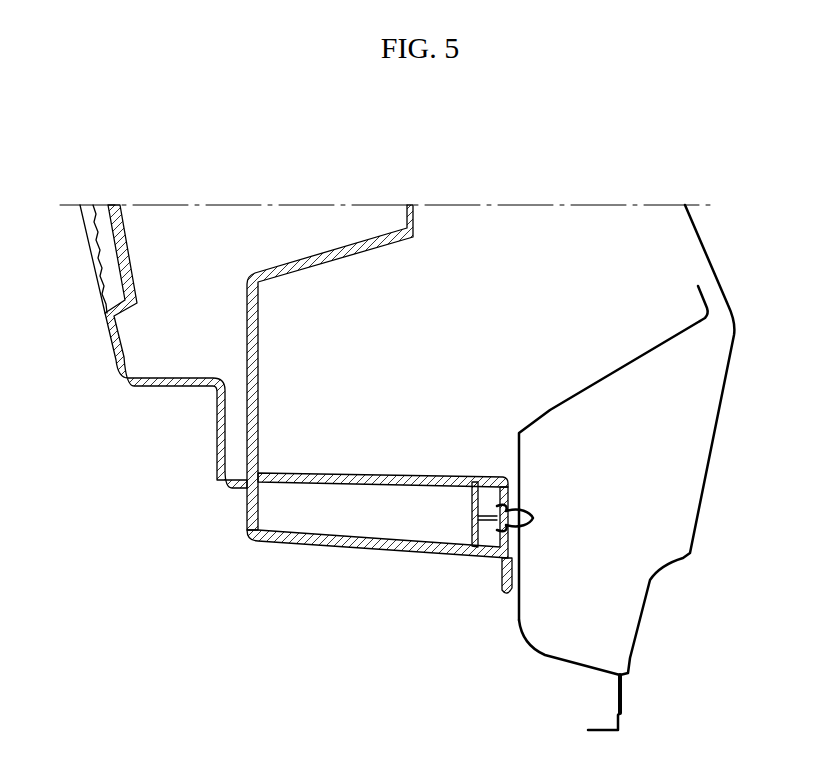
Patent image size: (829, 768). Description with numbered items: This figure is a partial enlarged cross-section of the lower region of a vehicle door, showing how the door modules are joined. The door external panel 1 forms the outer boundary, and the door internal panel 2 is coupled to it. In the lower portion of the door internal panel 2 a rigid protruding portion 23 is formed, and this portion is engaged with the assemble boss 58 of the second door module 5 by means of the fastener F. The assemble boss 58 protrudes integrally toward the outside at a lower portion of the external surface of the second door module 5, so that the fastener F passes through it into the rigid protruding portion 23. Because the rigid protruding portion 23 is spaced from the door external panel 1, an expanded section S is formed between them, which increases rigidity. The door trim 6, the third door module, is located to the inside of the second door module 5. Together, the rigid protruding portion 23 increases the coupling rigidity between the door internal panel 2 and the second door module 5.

The door external panel 1 is at (708, 457).
The door internal panel 2 is at (698, 294).
The second door module 5 is at (327, 250).
The door trim 6 is at (172, 377).
The rigid protruding portion 23 is at (510, 613).
The assemble boss 58 is at (375, 473).
The fastener F is at (527, 500).
The expanded section S is at (606, 509).